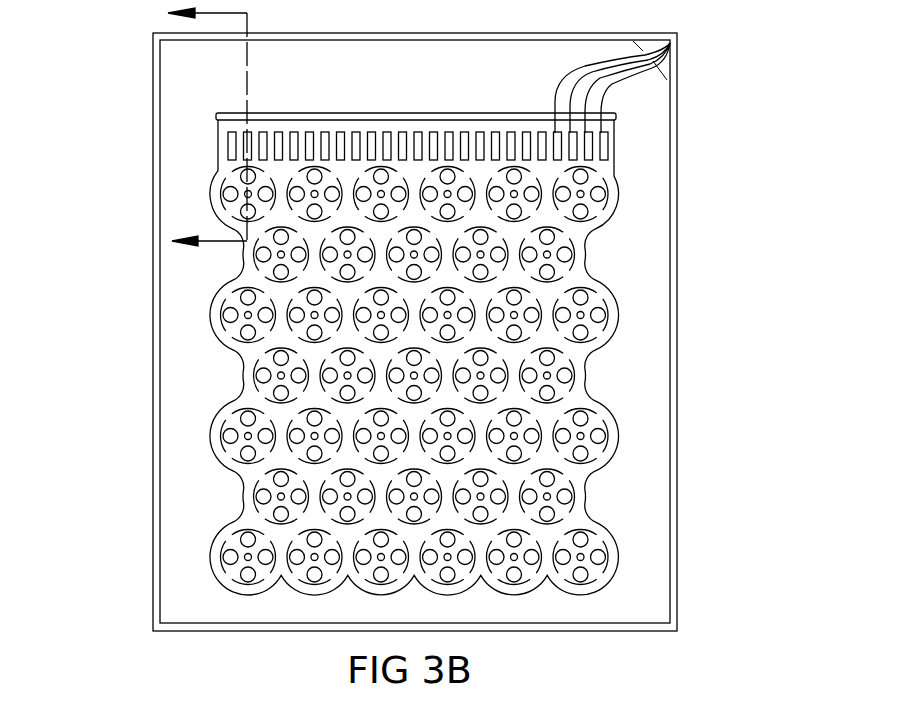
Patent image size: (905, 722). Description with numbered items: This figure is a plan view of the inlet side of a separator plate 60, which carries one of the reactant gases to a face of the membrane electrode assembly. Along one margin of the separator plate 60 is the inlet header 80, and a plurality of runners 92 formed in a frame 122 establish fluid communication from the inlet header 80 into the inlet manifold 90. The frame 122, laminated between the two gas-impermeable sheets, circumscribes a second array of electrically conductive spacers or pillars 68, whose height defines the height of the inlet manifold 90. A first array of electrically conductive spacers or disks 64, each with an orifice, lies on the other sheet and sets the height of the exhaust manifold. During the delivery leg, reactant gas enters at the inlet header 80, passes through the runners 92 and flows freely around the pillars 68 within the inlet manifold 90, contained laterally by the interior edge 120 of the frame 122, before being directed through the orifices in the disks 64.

The separator plate 60 is at (753, 80).
The disks 64 is at (610, 176).
The pillars 68 is at (587, 450).
The inlet header 80 is at (233, 123).
The inlet manifold 90 is at (247, 352).
The runners 92 is at (670, 43).
The interior edge 120 is at (627, 558).
The frame 122 is at (178, 512).